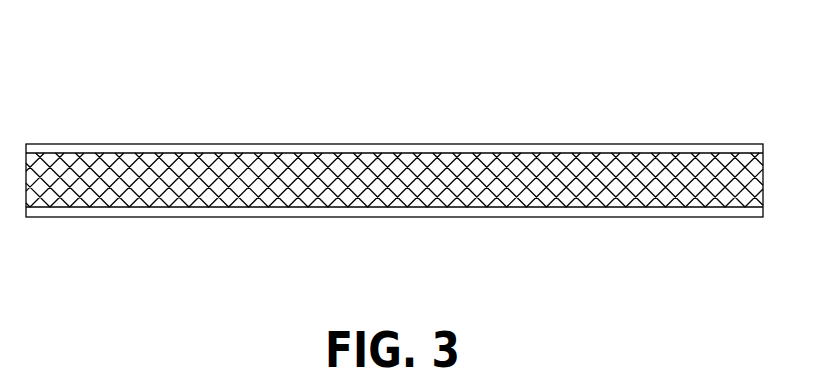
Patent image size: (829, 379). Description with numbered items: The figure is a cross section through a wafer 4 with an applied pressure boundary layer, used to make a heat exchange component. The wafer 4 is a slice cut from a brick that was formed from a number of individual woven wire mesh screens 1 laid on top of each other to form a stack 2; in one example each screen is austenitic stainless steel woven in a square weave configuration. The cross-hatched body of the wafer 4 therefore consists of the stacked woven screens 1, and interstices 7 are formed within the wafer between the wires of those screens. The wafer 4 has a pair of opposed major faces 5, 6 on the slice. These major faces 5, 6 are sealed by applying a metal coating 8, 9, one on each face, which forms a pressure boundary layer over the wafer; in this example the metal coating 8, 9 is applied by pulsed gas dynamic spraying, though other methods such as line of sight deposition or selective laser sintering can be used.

The woven wire mesh screen 1 is at (230, 163).
The stack 2 is at (493, 168).
The wafer 4 is at (683, 130).
The major face 5 is at (365, 154).
The major face 6 is at (418, 208).
The interstices 7 is at (108, 175).
The metal coating 8 is at (162, 145).
The metal coating 9 is at (552, 217).